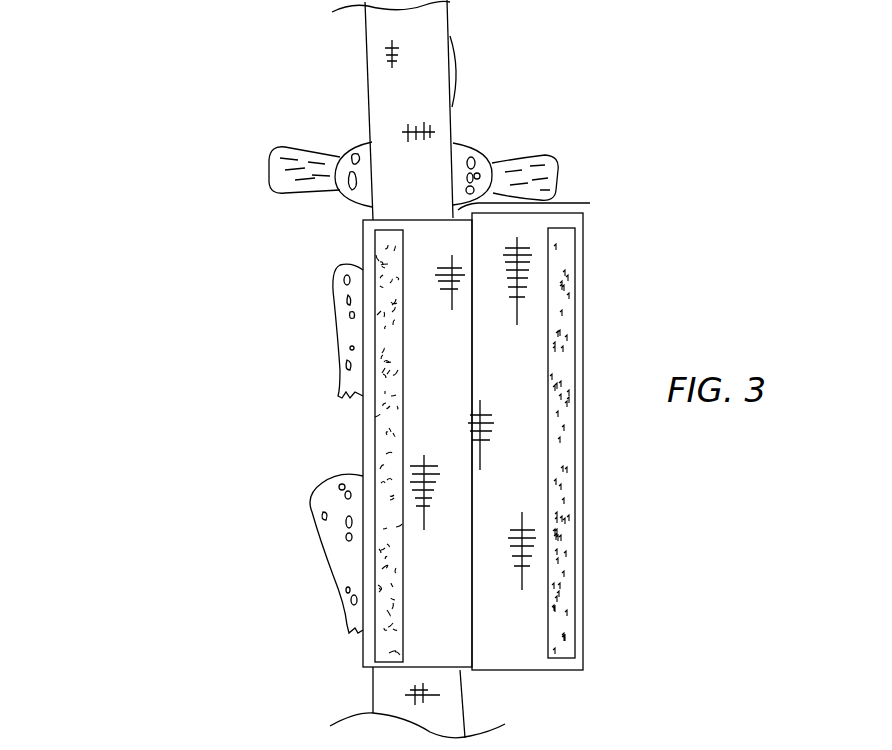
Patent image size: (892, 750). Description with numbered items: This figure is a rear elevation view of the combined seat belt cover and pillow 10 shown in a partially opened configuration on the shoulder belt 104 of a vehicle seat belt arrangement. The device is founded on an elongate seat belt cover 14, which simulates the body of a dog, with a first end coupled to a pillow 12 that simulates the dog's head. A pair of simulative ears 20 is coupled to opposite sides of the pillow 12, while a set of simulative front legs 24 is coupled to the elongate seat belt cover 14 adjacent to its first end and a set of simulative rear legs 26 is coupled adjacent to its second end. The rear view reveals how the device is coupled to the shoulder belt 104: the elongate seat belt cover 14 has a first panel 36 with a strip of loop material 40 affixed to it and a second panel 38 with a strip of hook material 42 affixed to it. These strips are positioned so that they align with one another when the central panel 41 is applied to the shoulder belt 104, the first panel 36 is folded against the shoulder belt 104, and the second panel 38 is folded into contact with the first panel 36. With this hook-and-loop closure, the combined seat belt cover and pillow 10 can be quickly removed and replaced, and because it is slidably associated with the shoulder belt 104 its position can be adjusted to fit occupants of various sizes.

The combined seat belt cover and pillow 10 is at (232, 279).
The pillow 12 is at (470, 150).
The elongate seat belt cover 14 is at (362, 425).
The simulative ears 20 is at (270, 152).
The simulative front legs 24 is at (340, 373).
The simulative rear legs 26 is at (312, 508).
The first panel 36 is at (420, 668).
The second panel 38 is at (507, 672).
The strip of loop material 40 is at (380, 453).
The central panel 41 is at (590, 203).
The strip of hook material 42 is at (573, 248).
The shoulder belt 104 is at (365, 41).